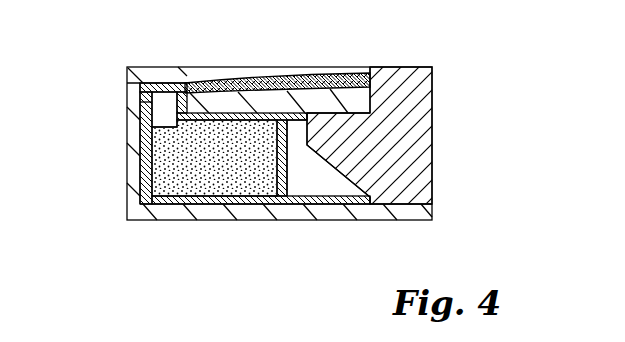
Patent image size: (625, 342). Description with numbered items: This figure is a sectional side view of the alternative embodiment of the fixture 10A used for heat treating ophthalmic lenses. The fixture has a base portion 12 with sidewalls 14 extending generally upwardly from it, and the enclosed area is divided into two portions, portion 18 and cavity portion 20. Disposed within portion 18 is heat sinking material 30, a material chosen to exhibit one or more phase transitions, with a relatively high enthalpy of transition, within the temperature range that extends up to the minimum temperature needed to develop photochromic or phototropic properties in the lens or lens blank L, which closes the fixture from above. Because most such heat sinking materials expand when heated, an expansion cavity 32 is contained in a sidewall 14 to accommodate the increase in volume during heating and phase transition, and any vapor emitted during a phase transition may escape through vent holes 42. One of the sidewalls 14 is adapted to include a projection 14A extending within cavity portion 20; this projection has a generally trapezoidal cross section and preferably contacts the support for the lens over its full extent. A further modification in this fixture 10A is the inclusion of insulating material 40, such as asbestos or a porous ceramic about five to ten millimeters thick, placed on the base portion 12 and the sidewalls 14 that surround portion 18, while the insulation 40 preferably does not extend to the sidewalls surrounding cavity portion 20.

The fixture 10A is at (455, 196).
The base portion 12 is at (340, 204).
The sidewalls 14 is at (412, 162).
The projection 14A is at (345, 125).
The portion 18 is at (212, 170).
The cavity portion 20 is at (293, 187).
The heat sinking material 30 is at (167, 158).
The expansion cavity 32 is at (163, 97).
The insulating material 40 is at (258, 213).
The vent holes 42 is at (140, 102).
The lens or lens blank L is at (311, 78).